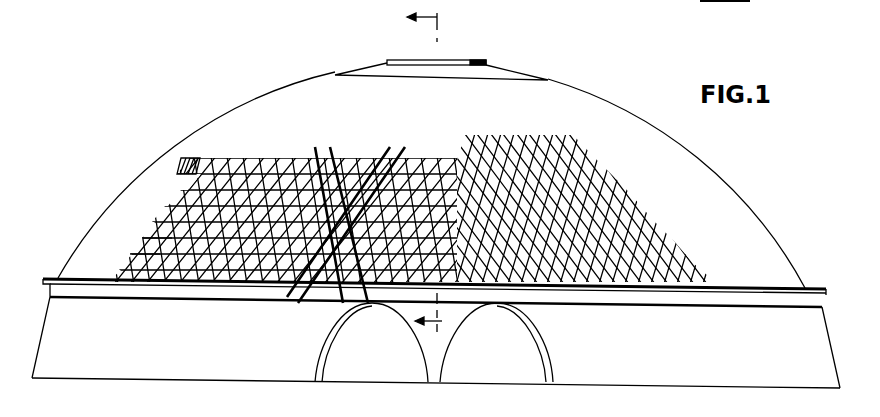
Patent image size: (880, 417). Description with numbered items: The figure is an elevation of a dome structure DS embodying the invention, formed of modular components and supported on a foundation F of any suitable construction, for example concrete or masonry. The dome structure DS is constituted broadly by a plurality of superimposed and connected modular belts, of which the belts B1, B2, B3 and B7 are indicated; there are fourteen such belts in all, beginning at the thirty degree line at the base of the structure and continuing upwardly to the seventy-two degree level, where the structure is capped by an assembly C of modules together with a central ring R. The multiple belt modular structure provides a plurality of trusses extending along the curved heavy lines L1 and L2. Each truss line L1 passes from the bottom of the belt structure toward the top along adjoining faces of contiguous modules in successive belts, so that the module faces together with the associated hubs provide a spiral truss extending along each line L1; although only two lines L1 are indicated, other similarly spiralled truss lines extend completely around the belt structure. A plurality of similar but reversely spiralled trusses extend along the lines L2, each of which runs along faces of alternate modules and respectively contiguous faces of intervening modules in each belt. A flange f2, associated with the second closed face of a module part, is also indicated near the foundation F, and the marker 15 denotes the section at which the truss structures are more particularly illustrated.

The dome structure DS is at (208, 119).
The cap assembly C is at (348, 70).
The central ring R is at (407, 61).
The section line (FIGURE 15) 15 is at (438, 182).
The truss line L1 is at (408, 140).
The reversely spiralled truss line L2 is at (333, 139).
The modular belt B1 is at (110, 271).
The modular belt B2 is at (131, 254).
The modular belt B3 is at (147, 231).
The modular belt B7 is at (176, 166).
The foundation F is at (112, 363).
The flange f2 is at (170, 414).